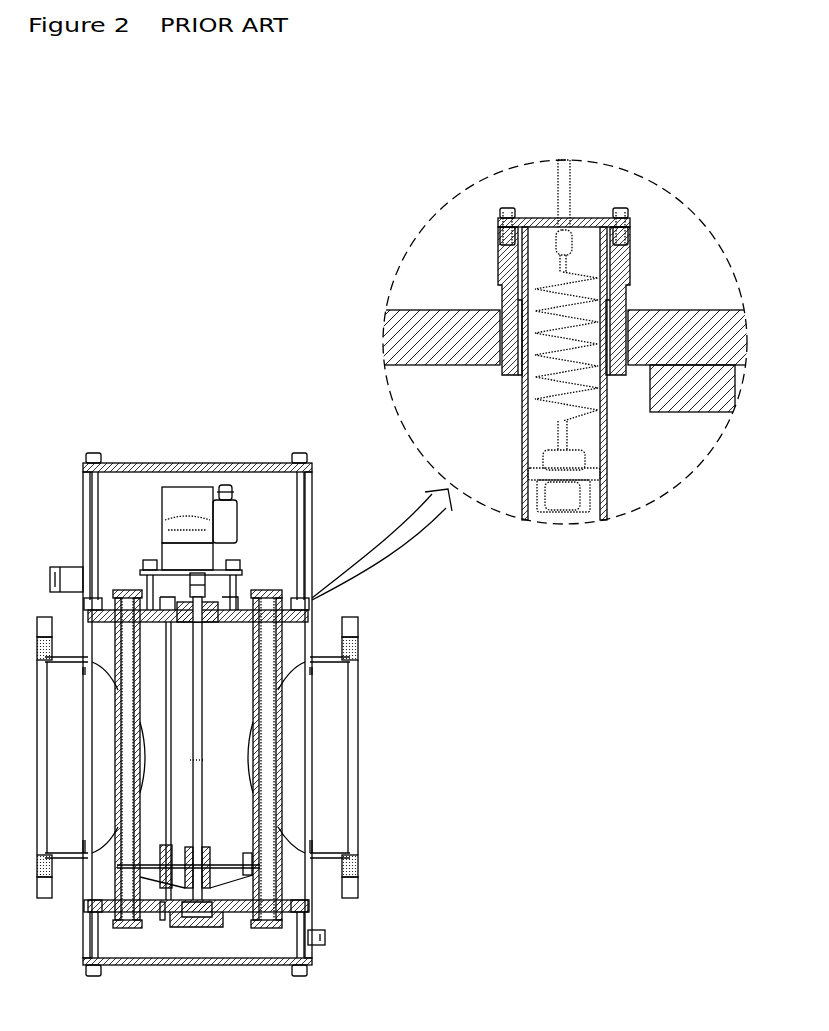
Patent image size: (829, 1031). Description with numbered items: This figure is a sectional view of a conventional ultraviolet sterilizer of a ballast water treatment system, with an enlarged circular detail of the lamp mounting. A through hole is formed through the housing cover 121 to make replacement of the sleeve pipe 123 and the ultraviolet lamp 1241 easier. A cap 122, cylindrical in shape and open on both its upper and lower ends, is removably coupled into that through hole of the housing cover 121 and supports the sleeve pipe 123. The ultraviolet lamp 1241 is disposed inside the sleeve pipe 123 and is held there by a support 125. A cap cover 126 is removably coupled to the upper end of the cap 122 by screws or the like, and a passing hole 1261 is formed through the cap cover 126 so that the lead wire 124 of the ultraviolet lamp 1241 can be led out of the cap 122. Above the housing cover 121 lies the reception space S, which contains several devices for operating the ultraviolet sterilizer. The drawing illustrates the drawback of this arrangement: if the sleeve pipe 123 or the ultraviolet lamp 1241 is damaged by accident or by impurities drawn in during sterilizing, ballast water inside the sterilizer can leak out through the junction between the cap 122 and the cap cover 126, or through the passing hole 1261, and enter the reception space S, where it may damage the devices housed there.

The reception space S is at (140, 502).
The housing cover 121 is at (400, 346).
The cap 122 is at (507, 265).
The sleeve pipe 123 is at (520, 480).
The lead wire 124 is at (580, 415).
The ultraviolet lamp 1241 is at (583, 503).
The support 125 is at (612, 240).
The cap cover 126 is at (533, 217).
The passing hole 1261 is at (572, 217).